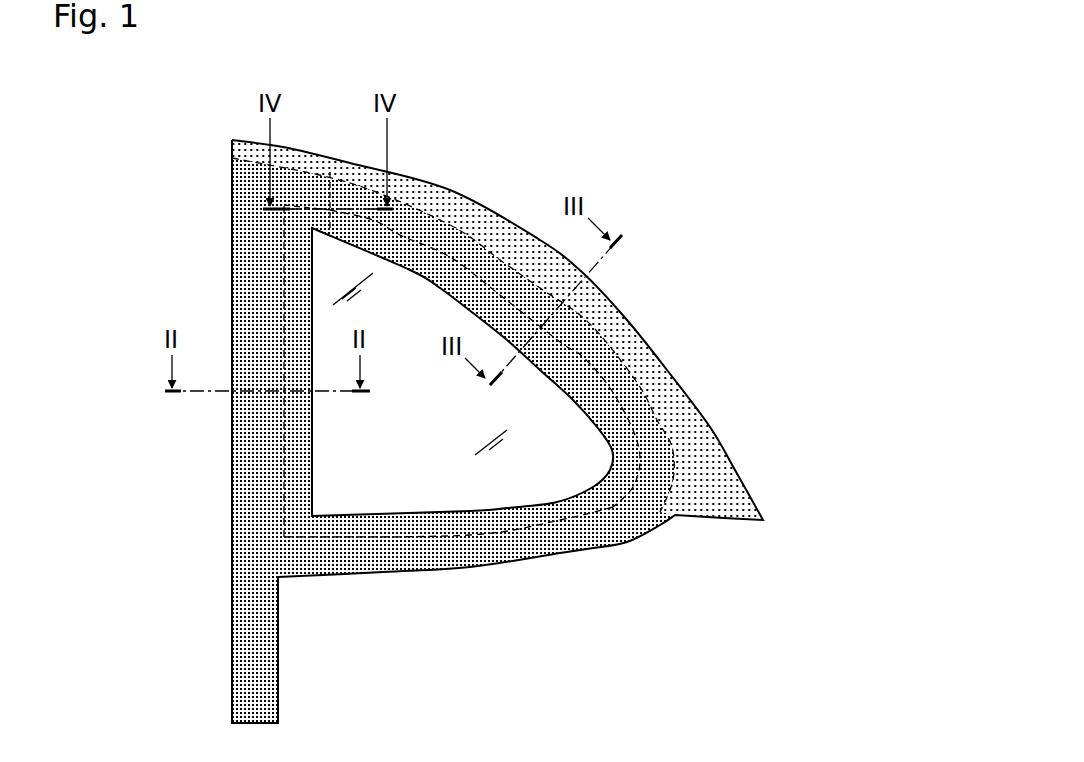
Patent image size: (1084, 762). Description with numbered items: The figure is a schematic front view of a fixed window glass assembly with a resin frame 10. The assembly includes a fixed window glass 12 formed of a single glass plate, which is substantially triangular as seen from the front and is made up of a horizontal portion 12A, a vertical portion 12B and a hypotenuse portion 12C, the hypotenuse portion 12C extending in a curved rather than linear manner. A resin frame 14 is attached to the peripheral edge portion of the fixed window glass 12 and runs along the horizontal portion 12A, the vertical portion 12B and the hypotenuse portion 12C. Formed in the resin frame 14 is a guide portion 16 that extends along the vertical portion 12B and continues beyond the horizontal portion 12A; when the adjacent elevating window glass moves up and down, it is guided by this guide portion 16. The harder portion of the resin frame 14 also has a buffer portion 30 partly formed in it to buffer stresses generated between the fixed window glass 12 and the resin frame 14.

The fixed window glass assembly with a resin frame 10 is at (512, 125).
The fixed window glass 12 is at (438, 421).
The horizontal portion 12A is at (428, 541).
The vertical portion 12B is at (283, 440).
The hypotenuse portion 12C is at (578, 352).
The resin frame 14 is at (725, 419).
The guide portion 16 is at (240, 651).
The buffer portion 30 is at (330, 172).